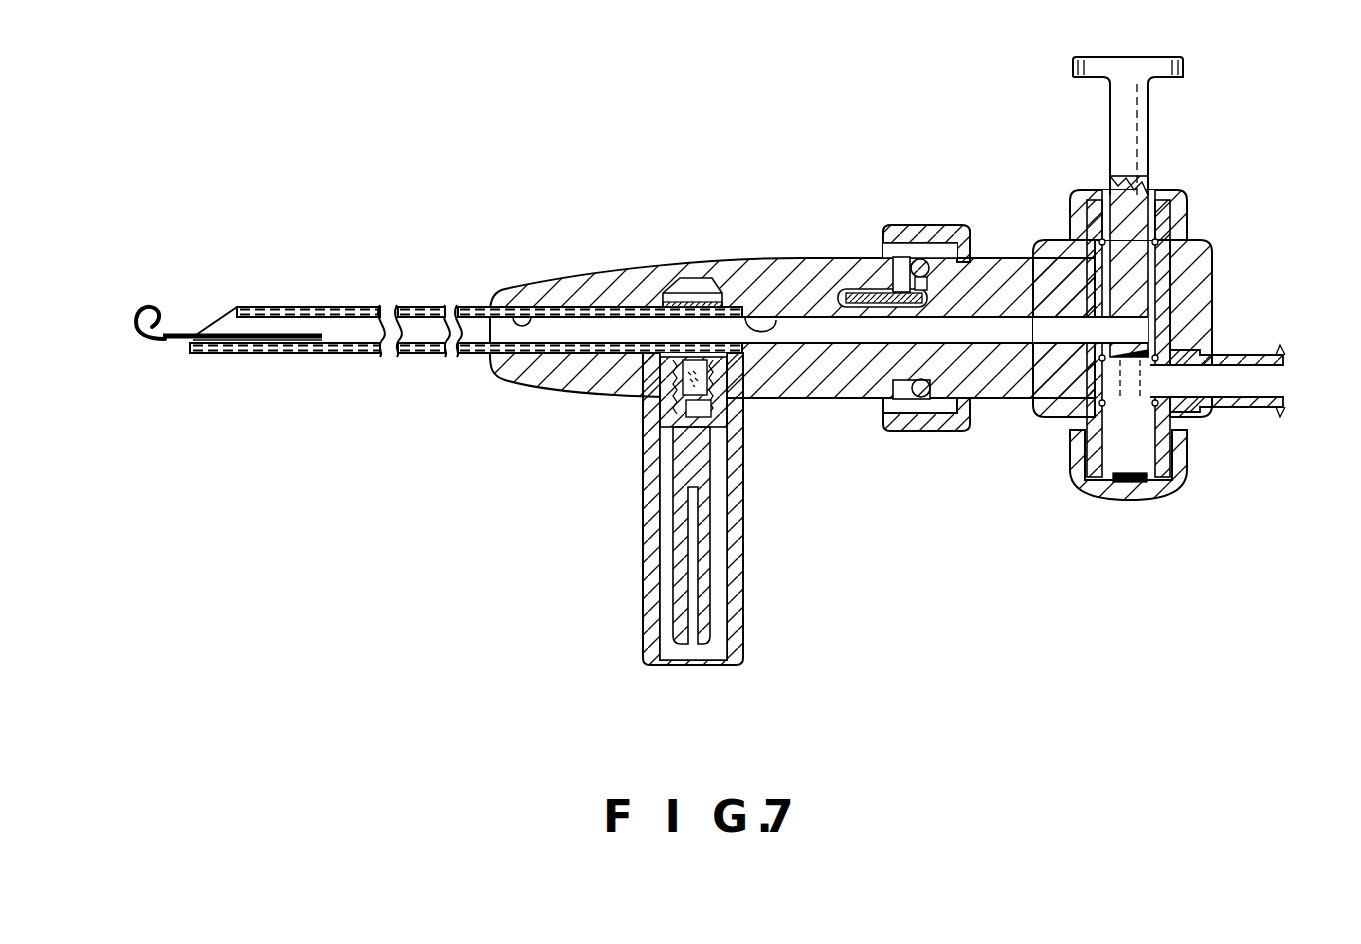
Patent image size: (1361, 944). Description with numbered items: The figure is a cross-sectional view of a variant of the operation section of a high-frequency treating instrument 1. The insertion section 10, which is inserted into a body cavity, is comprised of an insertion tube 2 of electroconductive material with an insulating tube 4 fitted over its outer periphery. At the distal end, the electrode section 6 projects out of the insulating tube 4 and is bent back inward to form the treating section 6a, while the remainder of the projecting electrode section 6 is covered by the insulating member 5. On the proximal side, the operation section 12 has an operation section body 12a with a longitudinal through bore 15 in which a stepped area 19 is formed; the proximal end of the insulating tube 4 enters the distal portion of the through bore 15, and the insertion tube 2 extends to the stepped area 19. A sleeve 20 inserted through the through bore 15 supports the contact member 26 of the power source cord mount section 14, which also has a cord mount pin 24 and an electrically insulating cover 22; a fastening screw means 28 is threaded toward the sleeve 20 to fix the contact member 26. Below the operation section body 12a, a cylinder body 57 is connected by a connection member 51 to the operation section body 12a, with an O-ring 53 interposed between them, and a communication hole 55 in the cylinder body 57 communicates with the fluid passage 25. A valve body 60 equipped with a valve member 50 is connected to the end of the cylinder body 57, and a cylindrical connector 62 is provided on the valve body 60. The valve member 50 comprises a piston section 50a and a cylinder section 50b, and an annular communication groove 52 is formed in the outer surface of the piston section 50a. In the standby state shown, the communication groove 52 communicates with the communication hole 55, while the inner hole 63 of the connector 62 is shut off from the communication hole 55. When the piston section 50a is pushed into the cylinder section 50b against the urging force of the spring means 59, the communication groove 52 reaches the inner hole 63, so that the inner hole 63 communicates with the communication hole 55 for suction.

The high-frequency treating instrument 1 is at (765, 230).
The insertion tube 2 is at (362, 309).
The insulating tube 4 is at (318, 307).
The insulating member 5 is at (178, 352).
The electrode section 6 is at (258, 350).
The treating section 6a is at (136, 324).
The insertion section 10 is at (427, 305).
The operation section 12 is at (840, 260).
The operation section body 12a is at (797, 394).
The power source cord mount section 14 is at (703, 509).
The through bore 15 is at (522, 316).
The stepped area 19 is at (772, 326).
The sleeve 20 is at (620, 312).
The electrically insulating cover 22 is at (737, 570).
The cord mount pin 24 is at (702, 628).
The fluid passage 25 is at (858, 360).
The contact member 26 is at (692, 279).
The fastening screw means 28 is at (664, 398).
The valve member 50 is at (1165, 153).
The piston section 50a is at (1108, 140).
The cylinder section 50b is at (1172, 428).
The connection member 51 is at (935, 243).
The annular communication groove 52 is at (1150, 292).
The O-ring 53 is at (958, 282).
The communication hole 55 is at (1020, 340).
The cylinder body 57 is at (990, 386).
The spring means 59 is at (1138, 490).
The valve body 60 is at (1205, 252).
The cylindrical connector 62 is at (1250, 352).
The inner hole 63 is at (1265, 388).